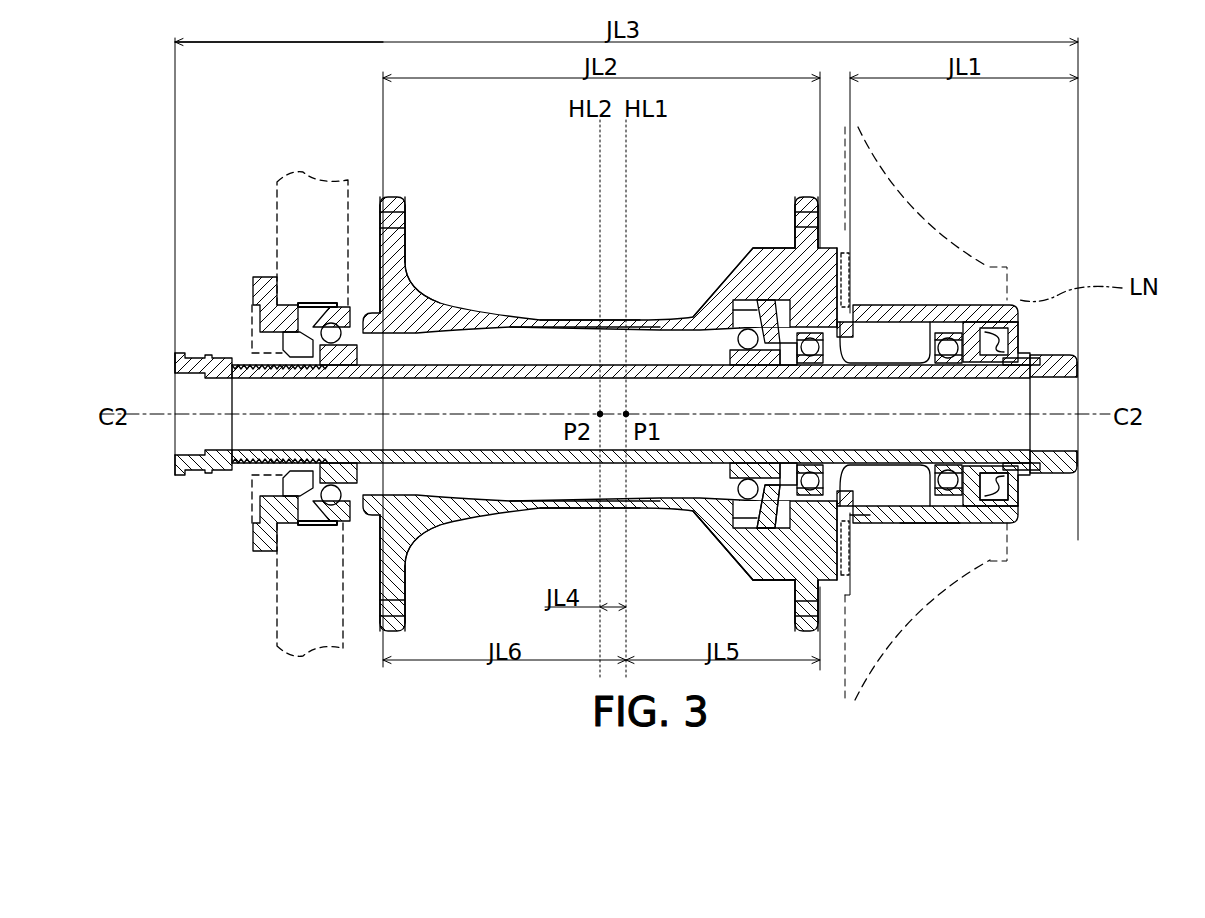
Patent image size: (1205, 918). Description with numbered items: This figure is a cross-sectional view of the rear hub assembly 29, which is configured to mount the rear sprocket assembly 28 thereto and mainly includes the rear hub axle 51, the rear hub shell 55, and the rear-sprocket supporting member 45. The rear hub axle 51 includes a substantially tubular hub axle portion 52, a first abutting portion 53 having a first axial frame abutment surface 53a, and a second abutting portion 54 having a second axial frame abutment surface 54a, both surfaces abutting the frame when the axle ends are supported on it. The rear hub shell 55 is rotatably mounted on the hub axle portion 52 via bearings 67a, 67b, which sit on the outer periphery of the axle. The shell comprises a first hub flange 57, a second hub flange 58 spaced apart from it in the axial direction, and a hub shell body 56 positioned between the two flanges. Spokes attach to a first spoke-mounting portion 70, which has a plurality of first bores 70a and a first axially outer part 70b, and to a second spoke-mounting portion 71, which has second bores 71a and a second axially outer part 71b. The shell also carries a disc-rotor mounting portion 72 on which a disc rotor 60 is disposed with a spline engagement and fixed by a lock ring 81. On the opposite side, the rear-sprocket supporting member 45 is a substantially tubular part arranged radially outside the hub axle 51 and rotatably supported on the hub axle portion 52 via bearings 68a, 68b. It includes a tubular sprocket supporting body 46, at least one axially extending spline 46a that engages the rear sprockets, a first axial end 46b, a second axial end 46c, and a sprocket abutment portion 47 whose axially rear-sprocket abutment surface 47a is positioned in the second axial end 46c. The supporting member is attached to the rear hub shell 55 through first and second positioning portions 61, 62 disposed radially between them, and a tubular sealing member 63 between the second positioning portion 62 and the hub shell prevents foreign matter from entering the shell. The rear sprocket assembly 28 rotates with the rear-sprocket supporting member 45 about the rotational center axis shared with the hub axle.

The rear hub assembly 29 is at (160, 108).
The rear sprocket assembly 28 is at (964, 239).
The rear-sprocket supporting member 45 is at (984, 292).
The sprocket supporting body 46 is at (955, 305).
The axially extending spline 46a is at (930, 523).
The first axial end 46b is at (997, 532).
The second axial end 46c is at (871, 527).
The sprocket abutment portion 47 is at (848, 275).
The axially rear-sprocket abutment surface 47a is at (850, 302).
The rear hub axle 51 is at (1098, 358).
The hub axle portion 52 is at (786, 372).
The first abutting portion 53 is at (1043, 368).
The first axial frame abutment surface 53a is at (1080, 362).
The second abutting portion 54 is at (192, 375).
The second axial frame abutment surface 54a is at (175, 360).
The rear hub shell 55 is at (507, 278).
The hub shell body 56 is at (540, 320).
The first hub flange 57 is at (757, 229).
The second hub flange 58 is at (425, 239).
The disc rotor 60 is at (300, 200).
The first positioning portion 61 is at (780, 578).
The second positioning portion 62 is at (765, 545).
The sealing member 63 is at (747, 527).
The bearing 67a is at (325, 379).
The bearing 67b is at (752, 372).
The bearing 68a is at (948, 367).
The bearing 68b is at (845, 349).
The first spoke-mounting portion 70 is at (800, 197).
The first bores 70a is at (788, 226).
The first axially outer part 70b is at (812, 197).
The second spoke-mounting portion 71 is at (393, 197).
The second bores 71a is at (424, 228).
The second axially outer part 71b is at (380, 228).
The disc-rotor mounting portion 72 is at (318, 287).
The lock ring 81 is at (255, 302).